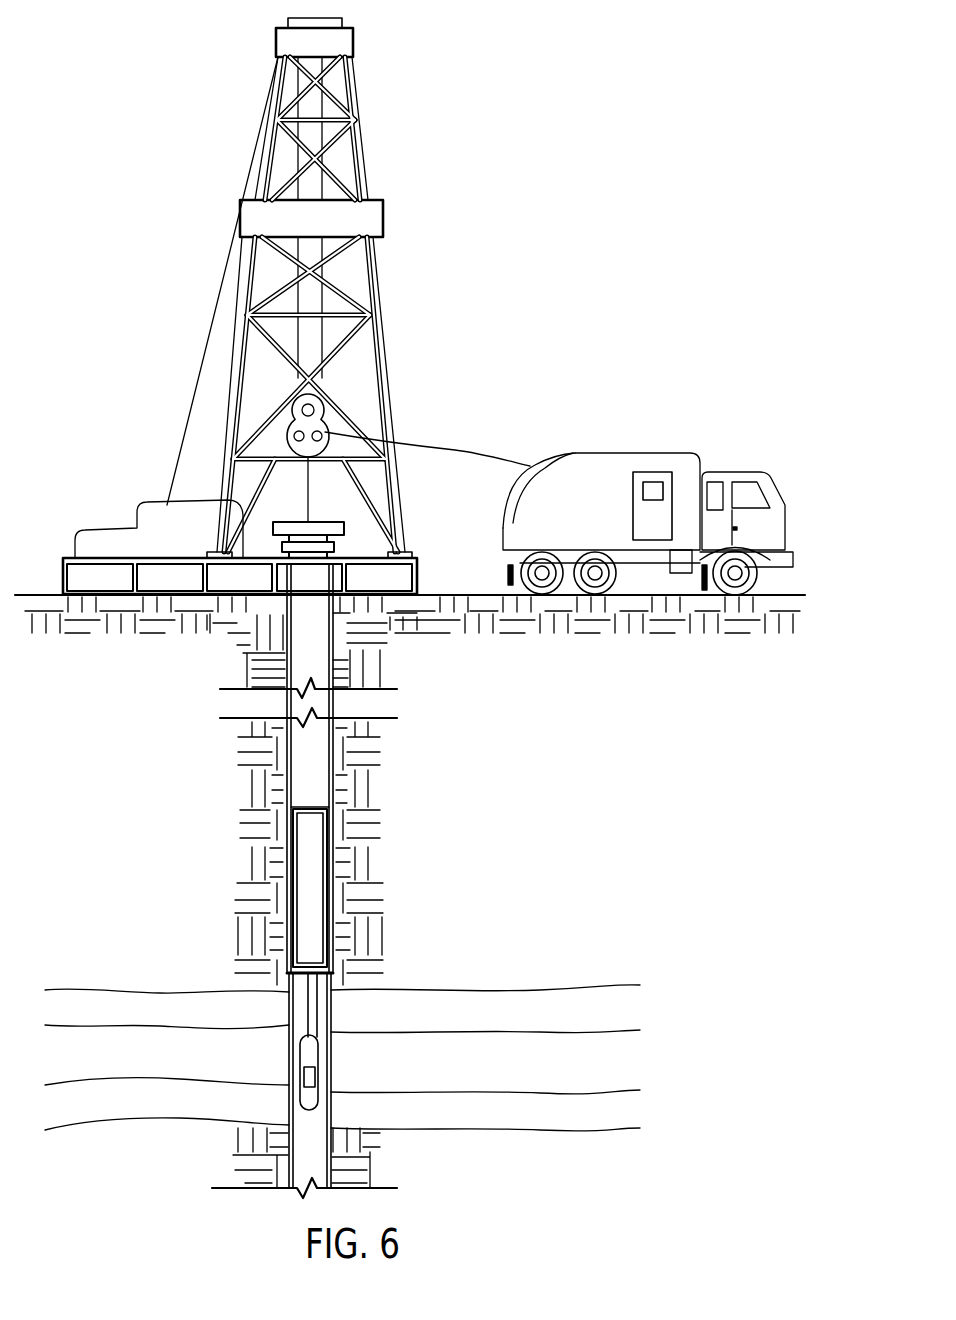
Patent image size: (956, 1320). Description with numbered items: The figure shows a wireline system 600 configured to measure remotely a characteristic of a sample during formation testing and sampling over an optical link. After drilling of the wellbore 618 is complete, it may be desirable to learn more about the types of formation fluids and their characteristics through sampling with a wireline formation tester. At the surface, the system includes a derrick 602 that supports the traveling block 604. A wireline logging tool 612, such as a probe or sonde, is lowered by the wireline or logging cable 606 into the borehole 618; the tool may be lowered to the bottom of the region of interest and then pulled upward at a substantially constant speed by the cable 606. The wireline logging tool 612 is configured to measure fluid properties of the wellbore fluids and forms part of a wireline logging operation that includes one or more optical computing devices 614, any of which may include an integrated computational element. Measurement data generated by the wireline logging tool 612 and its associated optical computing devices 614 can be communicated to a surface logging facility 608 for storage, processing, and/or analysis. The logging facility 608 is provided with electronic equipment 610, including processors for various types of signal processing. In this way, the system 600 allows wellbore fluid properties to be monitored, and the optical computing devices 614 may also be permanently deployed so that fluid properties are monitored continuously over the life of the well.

The wireline system 600 is at (559, 191).
The derrick 602 is at (408, 540).
The traveling block 604 is at (323, 410).
The wireline or logging cable 606 is at (455, 450).
The surface logging facility 608 is at (597, 450).
The electronic equipment 610 is at (658, 482).
The wireline logging tool 612 is at (330, 1038).
The optical computing device 614 is at (315, 1077).
The wellbore 618 is at (289, 1006).